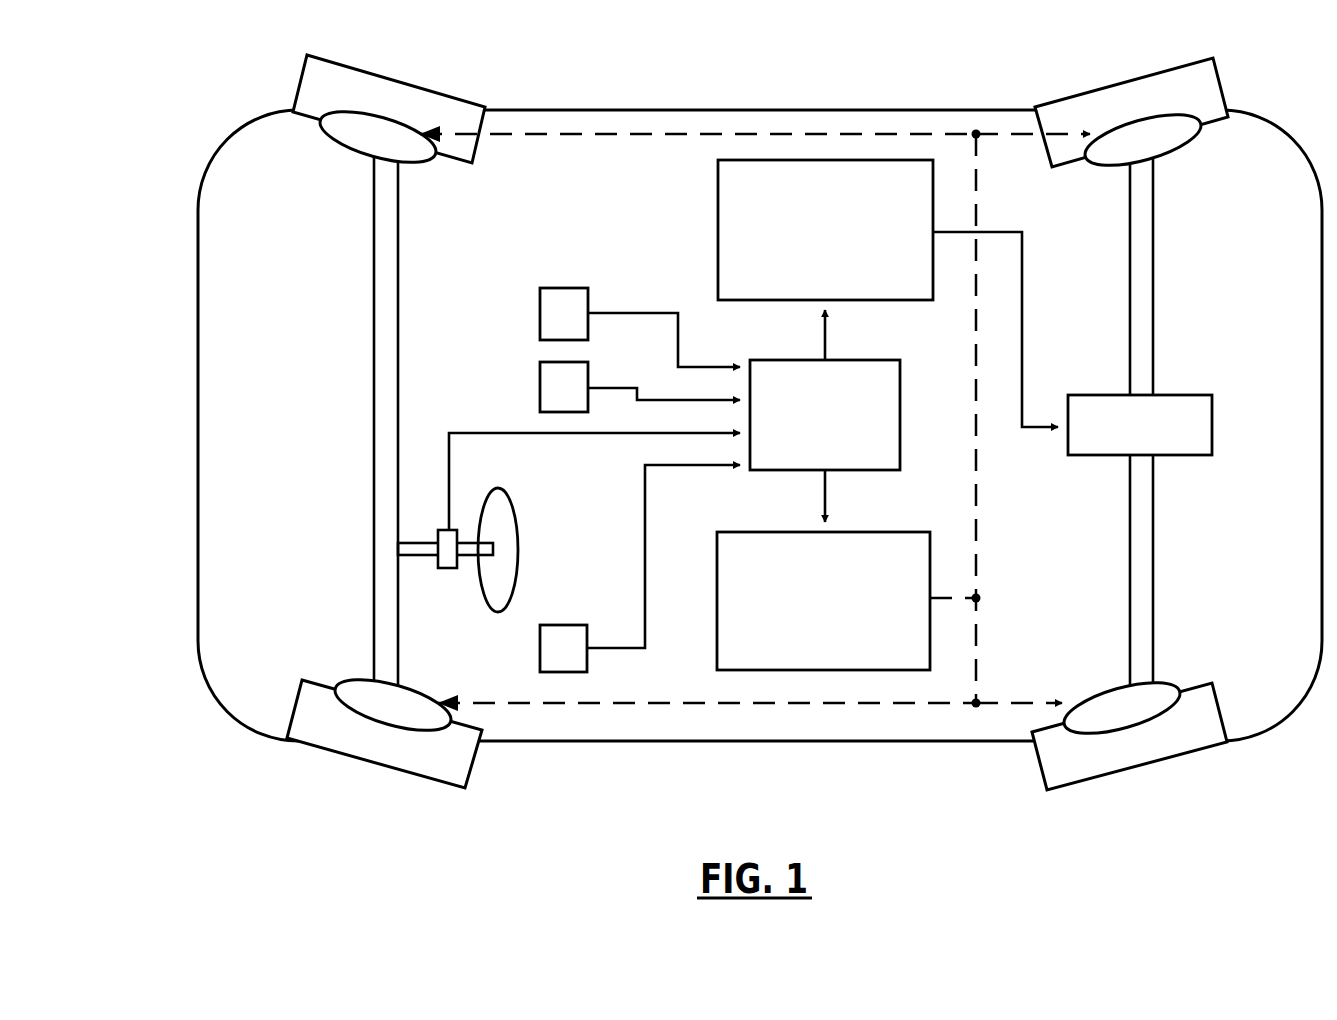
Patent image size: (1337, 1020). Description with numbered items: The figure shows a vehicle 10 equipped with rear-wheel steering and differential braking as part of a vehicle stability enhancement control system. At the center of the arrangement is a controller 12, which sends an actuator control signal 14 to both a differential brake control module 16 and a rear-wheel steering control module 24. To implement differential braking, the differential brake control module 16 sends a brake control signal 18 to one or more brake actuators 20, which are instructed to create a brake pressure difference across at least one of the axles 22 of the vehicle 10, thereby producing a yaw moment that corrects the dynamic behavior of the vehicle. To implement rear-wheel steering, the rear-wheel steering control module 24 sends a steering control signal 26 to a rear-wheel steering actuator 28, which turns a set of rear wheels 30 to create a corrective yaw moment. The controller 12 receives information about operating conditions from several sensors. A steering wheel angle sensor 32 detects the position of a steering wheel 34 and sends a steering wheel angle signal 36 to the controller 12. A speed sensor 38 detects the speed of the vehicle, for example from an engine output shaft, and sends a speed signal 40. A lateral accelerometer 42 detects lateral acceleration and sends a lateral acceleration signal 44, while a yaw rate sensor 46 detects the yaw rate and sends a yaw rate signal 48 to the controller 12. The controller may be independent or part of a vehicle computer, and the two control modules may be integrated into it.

The vehicle 10 is at (215, 167).
The controller 12 is at (887, 360).
The actuator control signal 14 is at (825, 345).
The differential brake control module 16 is at (877, 532).
The brake control signal 18 is at (582, 136).
The brake actuators 20 is at (345, 150).
The axles 22 is at (374, 320).
The rear-wheel steering control module 24 is at (718, 206).
The steering control signal 26 is at (1022, 285).
The rear-wheel steering actuator 28 is at (1212, 424).
The rear wheels 30 is at (1128, 80).
The steering wheel angle sensor 32 is at (438, 530).
The steering wheel 34 is at (518, 524).
The steering wheel angle signal 36 is at (449, 473).
The speed sensor 38 is at (540, 313).
The speed signal 40 is at (678, 312).
The lateral accelerometer 42 is at (540, 648).
The lateral acceleration signal 44 is at (645, 580).
The yaw rate sensor 46 is at (540, 386).
The yaw rate signal 48 is at (601, 387).